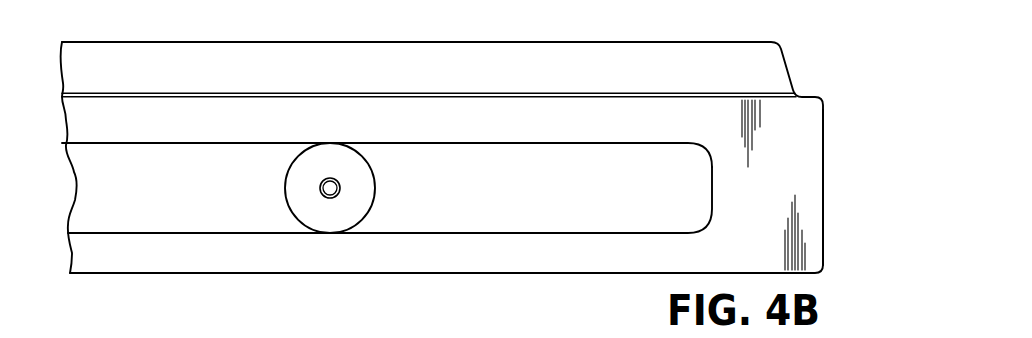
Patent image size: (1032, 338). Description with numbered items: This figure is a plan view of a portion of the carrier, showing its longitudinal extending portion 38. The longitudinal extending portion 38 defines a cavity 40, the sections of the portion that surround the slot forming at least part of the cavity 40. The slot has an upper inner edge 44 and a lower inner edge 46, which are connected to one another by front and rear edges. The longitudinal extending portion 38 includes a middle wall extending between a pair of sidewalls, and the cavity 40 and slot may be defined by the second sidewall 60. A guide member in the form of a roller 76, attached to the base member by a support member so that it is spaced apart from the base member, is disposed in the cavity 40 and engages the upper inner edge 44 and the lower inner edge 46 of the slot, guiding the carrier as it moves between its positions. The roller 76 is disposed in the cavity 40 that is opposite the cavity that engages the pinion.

The longitudinal extending portion 38 is at (817, 83).
The cavity 40 is at (115, 187).
The upper inner edge 44 is at (253, 144).
The lower inner edge 46 is at (208, 224).
The second sidewall 60 is at (823, 193).
The roller 76 is at (333, 215).